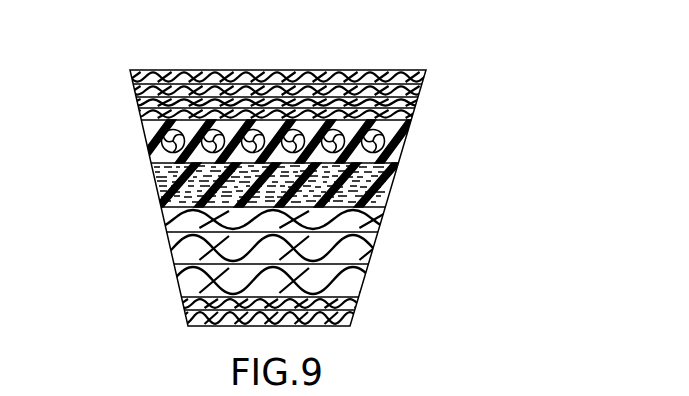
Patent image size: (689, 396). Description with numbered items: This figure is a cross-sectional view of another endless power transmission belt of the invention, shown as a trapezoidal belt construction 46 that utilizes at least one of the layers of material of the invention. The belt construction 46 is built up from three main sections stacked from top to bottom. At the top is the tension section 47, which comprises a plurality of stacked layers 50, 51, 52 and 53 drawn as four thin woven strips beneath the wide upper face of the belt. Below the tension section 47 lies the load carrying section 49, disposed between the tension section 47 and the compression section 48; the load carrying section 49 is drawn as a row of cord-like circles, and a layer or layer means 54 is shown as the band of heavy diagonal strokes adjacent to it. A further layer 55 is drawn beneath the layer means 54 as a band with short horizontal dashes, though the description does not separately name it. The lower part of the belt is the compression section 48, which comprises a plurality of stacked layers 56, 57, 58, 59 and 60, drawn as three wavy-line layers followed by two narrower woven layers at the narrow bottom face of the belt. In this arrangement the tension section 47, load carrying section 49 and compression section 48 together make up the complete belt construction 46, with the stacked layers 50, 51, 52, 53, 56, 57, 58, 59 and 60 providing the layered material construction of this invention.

The belt construction 46 is at (484, 64).
The tension section 47 is at (242, 94).
The compression section 48 is at (292, 281).
The load carrying section 49 is at (392, 131).
The stacked layer 50 is at (147, 73).
The stacked layer 51 is at (140, 92).
The stacked layer 52 is at (140, 105).
The stacked layer 53 is at (142, 113).
The layer means 54 is at (397, 153).
The elastomer layer 55 is at (390, 180).
The stacked layer 56 is at (170, 218).
The stacked layer 57 is at (172, 245).
The stacked layer 58 is at (187, 282).
The stacked layer 59 is at (187, 302).
The stacked layer 60 is at (193, 322).